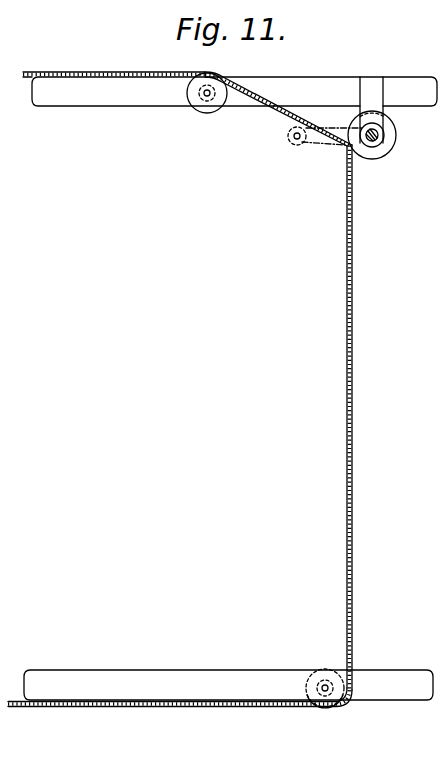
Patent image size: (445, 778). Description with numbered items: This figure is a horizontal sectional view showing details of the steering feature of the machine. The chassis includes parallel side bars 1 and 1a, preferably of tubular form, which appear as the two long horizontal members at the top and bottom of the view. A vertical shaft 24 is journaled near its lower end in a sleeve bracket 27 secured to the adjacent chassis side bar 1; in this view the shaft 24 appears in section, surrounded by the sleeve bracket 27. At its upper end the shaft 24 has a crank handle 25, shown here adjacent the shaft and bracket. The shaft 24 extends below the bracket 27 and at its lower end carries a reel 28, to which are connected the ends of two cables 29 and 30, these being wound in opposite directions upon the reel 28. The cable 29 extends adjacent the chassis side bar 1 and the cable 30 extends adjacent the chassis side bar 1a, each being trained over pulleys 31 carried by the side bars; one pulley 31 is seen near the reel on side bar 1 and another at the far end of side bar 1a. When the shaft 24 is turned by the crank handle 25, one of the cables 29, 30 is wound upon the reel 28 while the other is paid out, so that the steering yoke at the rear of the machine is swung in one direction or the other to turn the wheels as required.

The side bar 1 is at (113, 95).
The side bar 1a is at (88, 680).
The vertical shaft 24 is at (385, 134).
The crank handle 25 is at (328, 142).
The sleeve bracket 27 is at (378, 97).
The reel 28 is at (393, 150).
The cable 29 is at (280, 109).
The cable 30 is at (347, 361).
The pulley 31 is at (208, 113).